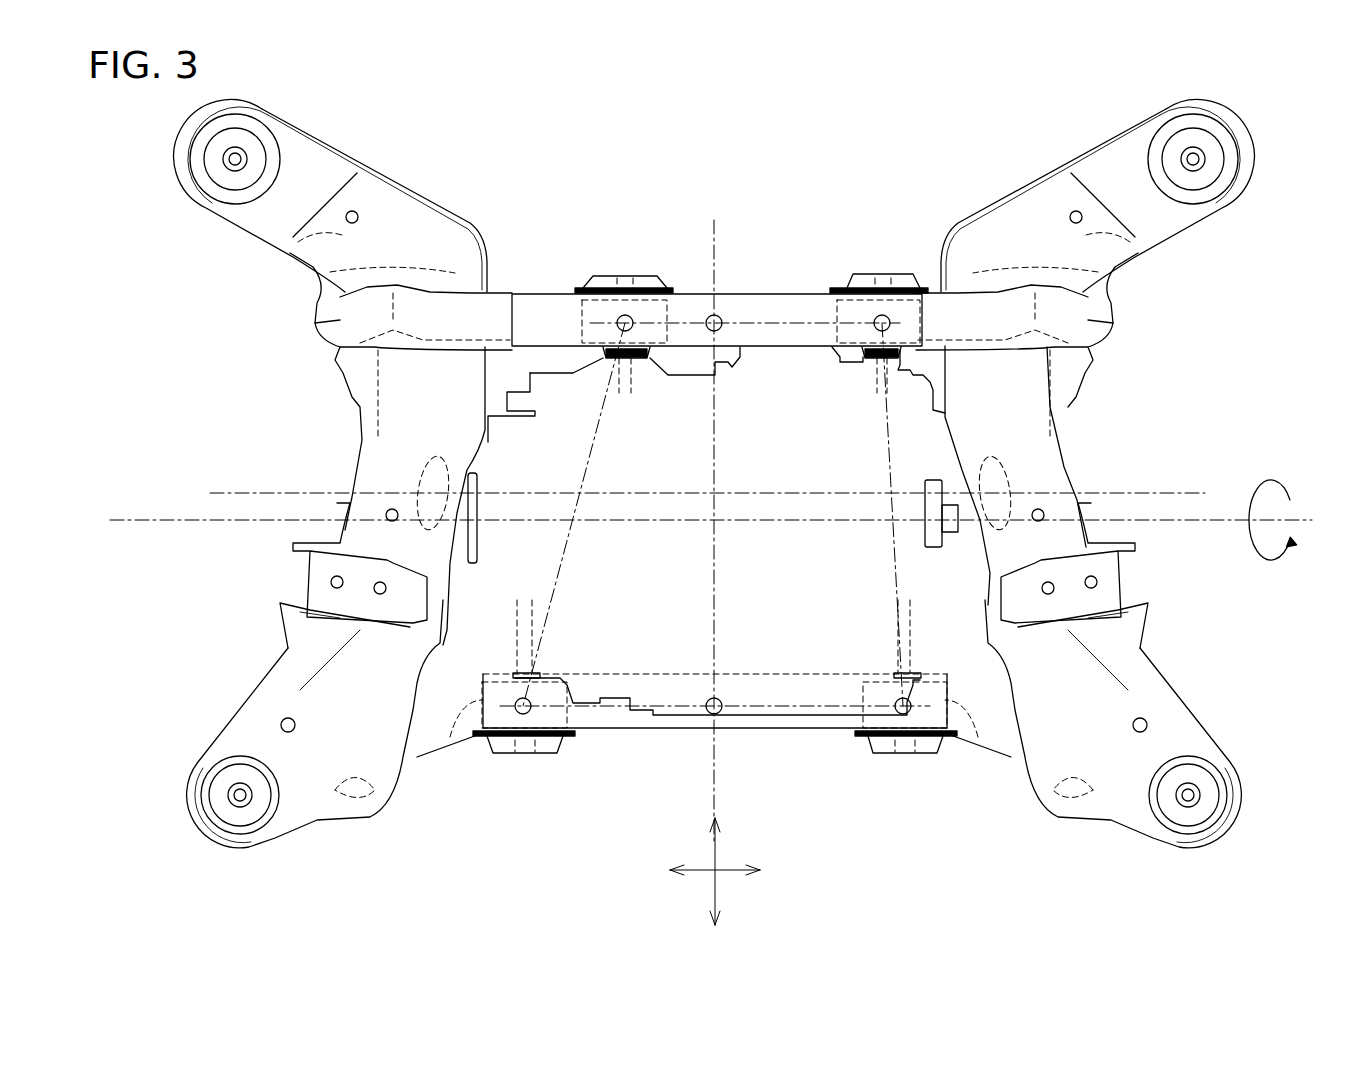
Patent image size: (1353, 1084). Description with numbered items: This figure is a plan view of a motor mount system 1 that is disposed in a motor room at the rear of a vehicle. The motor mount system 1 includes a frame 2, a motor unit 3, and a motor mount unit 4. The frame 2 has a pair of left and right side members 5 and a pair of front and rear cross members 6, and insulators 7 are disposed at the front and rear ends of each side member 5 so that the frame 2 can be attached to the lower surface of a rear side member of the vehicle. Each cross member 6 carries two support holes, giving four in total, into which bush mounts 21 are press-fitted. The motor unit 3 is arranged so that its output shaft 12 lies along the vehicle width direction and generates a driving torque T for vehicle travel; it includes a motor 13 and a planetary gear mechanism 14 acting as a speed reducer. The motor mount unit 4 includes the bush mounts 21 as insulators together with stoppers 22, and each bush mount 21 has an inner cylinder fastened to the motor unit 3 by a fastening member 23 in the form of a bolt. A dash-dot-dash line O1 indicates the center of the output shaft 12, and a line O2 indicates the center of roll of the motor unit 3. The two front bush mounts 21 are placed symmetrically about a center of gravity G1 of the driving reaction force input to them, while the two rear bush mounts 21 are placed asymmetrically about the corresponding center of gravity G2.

The motor mount system 1 is at (918, 123).
The frame 2 is at (408, 180).
The motor unit 3 is at (950, 385).
The motor mount unit 4 is at (897, 267).
The side member 5 is at (270, 690).
The cross member 6 is at (545, 302).
The insulator 7 is at (222, 172).
The output shaft 12 is at (946, 547).
The motor 13 is at (797, 355).
The planetary gear mechanism 14 is at (478, 418).
The bush mount 21 is at (598, 300).
The stopper 22 is at (645, 278).
The fastening member 23 is at (630, 388).
The center of gravity of driving reaction force on front bush mounts G1 is at (720, 712).
The center of gravity of driving reaction force on rear bush mounts G2 is at (720, 318).
The output shaft center line O1 is at (1192, 522).
The roll center line O2 is at (1163, 493).
The driving torque T is at (1273, 535).